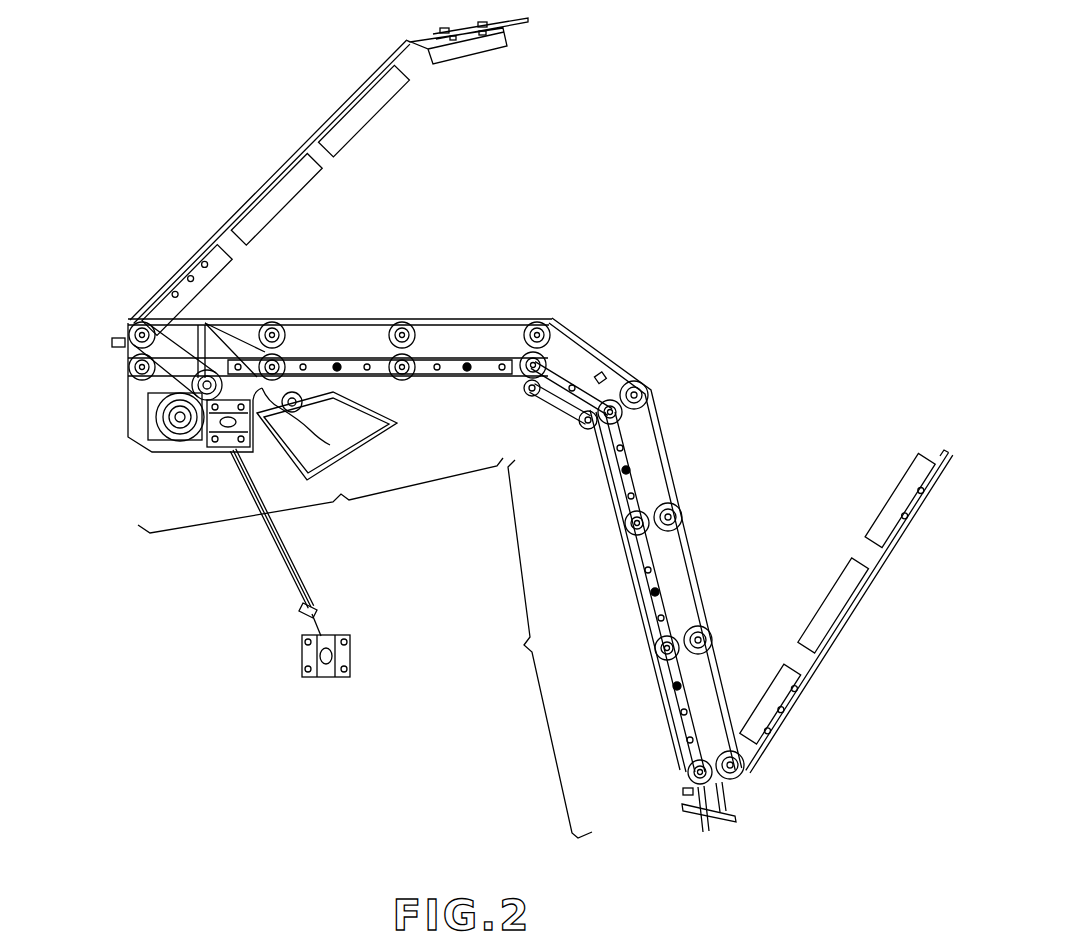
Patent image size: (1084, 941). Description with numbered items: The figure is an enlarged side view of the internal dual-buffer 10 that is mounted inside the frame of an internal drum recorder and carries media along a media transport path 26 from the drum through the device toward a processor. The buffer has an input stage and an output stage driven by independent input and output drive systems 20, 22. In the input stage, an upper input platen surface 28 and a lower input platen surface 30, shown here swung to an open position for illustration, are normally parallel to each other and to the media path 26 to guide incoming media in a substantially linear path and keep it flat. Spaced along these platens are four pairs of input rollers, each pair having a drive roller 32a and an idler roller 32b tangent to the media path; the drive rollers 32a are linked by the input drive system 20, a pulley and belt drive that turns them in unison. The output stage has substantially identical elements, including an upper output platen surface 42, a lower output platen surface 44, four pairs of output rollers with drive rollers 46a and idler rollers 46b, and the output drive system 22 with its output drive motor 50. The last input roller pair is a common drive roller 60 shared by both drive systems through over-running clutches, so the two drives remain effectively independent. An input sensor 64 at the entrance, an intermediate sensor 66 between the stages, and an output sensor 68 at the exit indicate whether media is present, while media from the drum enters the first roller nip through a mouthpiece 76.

The internal dual-buffer 10 is at (771, 192).
The input drive system 20 is at (646, 566).
The output drive system 22 is at (340, 326).
The media transport path 26 is at (458, 362).
The upper input platen surface 28 is at (880, 512).
The lower input platen surface 30 is at (630, 470).
The input drive roller 32a is at (690, 777).
The input idler roller 32b is at (649, 397).
The upper output platen surface 42 is at (393, 110).
The lower output platen surface 44 is at (524, 370).
The output drive roller 46a is at (140, 372).
The output idler roller 46b is at (130, 317).
The output drive motor 50 is at (170, 447).
The common drive roller 60 is at (603, 428).
The input sensor 64 is at (672, 803).
The intermediate sensor 66 is at (602, 376).
The output sensor 68 is at (113, 336).
The mouthpiece 76 is at (723, 820).